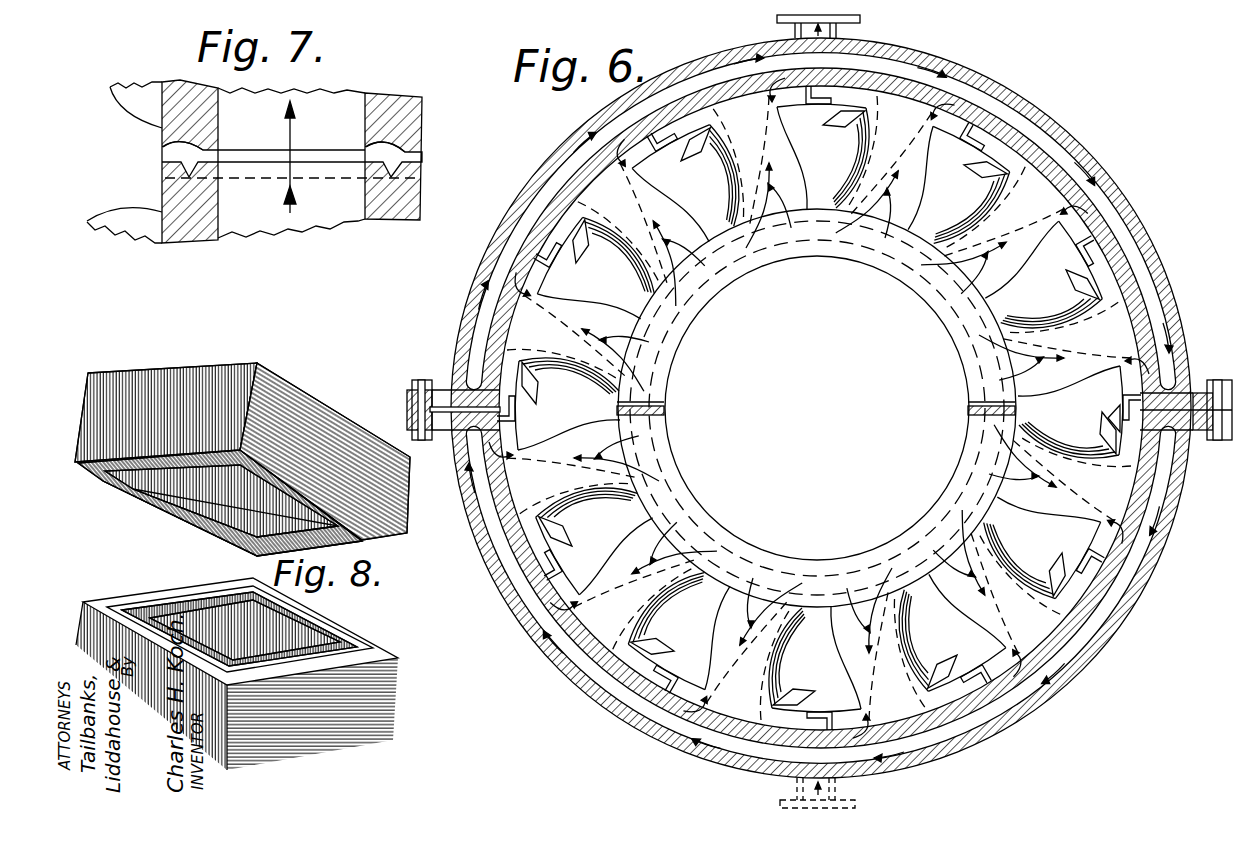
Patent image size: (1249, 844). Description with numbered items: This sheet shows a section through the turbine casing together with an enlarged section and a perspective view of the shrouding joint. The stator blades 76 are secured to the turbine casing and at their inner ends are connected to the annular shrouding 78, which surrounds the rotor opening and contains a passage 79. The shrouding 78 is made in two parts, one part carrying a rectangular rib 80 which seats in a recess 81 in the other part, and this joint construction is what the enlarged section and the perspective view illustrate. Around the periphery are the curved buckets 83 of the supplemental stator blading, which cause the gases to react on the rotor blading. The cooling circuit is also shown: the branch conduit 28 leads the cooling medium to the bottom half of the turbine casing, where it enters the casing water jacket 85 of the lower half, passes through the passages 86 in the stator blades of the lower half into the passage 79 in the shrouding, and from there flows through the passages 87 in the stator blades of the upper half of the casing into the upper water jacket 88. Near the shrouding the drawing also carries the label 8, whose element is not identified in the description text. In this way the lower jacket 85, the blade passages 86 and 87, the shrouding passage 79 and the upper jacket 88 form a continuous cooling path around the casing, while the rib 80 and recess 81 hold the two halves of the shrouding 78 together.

In FIG. 6, the water jacket 88 is at (712, 74).
In FIG. 6, the casing water jacket 85 is at (934, 740).
In FIG. 6, the passages 87 is at (953, 402).
In FIG. 6, the passages 86 is at (684, 414).
In FIG. 6, the passage 79 is at (817, 408).
In FIG. 7, the passage 79 is at (291, 157).
In FIG. 8, the passage 79 is at (215, 496).
In FIG. 6, the annular shrouding 78 is at (722, 286).
In FIG. 7, the annular shrouding 78 is at (403, 108).
In FIG. 8, the annular shrouding 78 is at (380, 707).
In FIG. 6, the inlet passage 8 is at (640, 382).
In FIG. 6, the recess 81 is at (643, 409).
In FIG. 7, the recess 81 is at (162, 168).
In FIG. 8, the recess 81 is at (130, 610).
In FIG. 6, the rectangular rib 80 is at (970, 394).
In FIG. 7, the rectangular rib 80 is at (162, 142).
In FIG. 8, the rectangular rib 80 is at (147, 503).
In FIG. 6, the curved buckets 83 is at (1108, 418).
In FIG. 6, the branch conduit 28 is at (819, 411).
In FIG. 8, the stator blades 76 is at (290, 396).